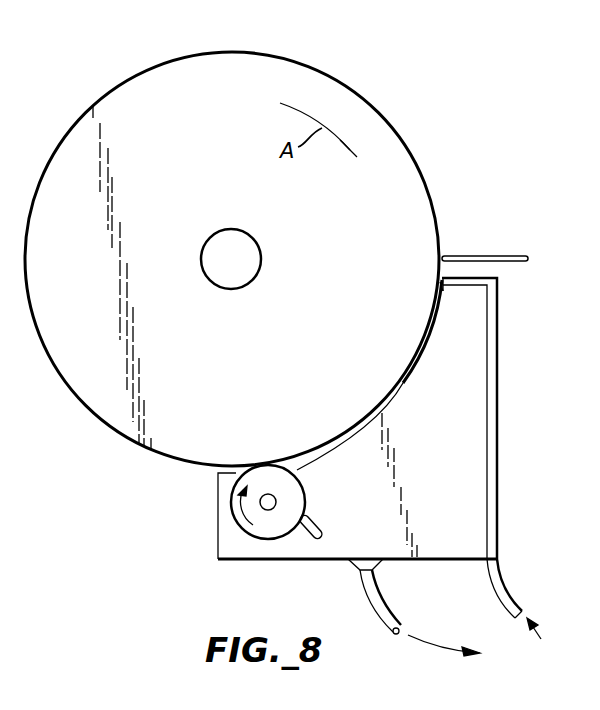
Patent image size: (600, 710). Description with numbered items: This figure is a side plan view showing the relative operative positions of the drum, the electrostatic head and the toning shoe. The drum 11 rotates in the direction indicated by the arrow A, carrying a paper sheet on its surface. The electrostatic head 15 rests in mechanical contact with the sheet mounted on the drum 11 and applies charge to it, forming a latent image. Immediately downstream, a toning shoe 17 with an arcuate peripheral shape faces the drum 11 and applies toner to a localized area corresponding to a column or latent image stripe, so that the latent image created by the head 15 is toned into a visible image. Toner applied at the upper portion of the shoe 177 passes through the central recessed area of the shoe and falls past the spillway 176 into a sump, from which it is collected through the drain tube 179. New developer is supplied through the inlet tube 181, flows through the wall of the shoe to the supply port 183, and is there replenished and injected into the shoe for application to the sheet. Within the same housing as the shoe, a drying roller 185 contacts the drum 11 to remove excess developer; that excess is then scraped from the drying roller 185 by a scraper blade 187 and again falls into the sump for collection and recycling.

The drum 11 is at (415, 190).
The electrostatic head 15 is at (478, 255).
The supply port 183 is at (470, 283).
The toning shoe 17 is at (427, 342).
The upper portion of the shoe 177 is at (441, 289).
The spillway 176 is at (403, 384).
The drying roller 185 is at (290, 483).
The scraper blade 187 is at (320, 522).
The drain tube 179 is at (377, 595).
The inlet tube 181 is at (510, 607).